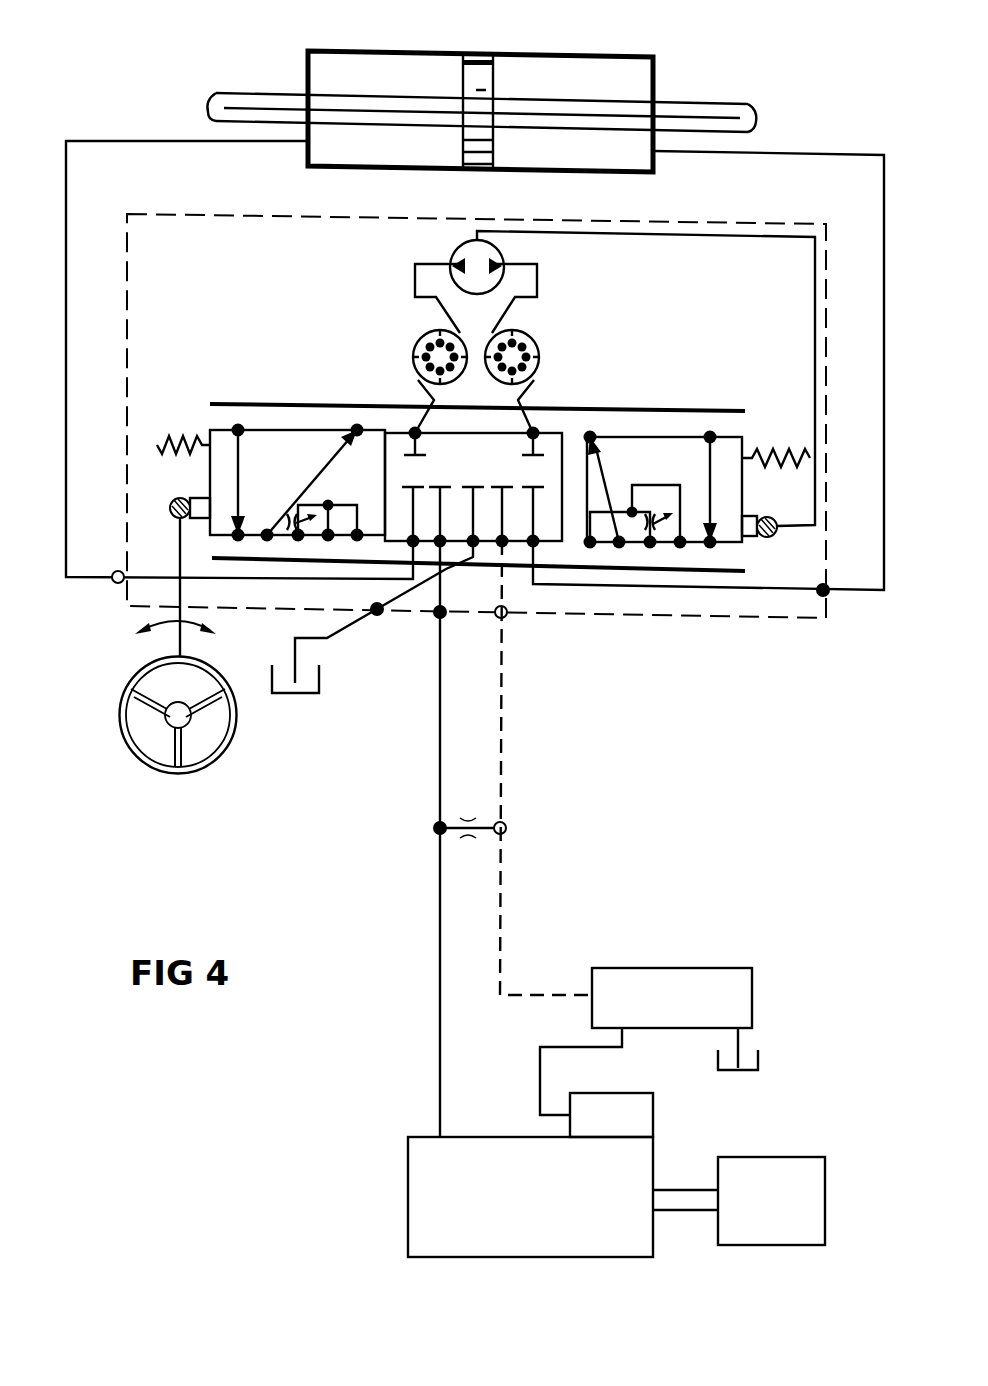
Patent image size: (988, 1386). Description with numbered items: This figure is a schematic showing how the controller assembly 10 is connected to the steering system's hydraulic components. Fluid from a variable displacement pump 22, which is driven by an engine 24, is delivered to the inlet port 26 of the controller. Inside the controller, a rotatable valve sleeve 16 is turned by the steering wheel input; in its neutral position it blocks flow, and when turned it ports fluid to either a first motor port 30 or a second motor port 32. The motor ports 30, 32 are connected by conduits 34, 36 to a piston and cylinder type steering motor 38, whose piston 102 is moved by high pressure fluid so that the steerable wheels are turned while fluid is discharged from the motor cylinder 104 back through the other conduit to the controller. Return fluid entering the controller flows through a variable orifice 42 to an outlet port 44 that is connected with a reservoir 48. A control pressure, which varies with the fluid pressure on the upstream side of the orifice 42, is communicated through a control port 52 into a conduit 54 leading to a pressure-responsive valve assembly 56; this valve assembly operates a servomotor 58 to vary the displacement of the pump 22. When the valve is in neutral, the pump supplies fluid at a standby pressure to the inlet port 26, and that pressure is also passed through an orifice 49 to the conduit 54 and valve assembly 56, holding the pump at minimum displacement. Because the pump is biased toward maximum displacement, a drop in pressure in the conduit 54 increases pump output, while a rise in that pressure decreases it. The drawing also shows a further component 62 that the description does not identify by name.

The controller assembly 10 is at (776, 222).
The valve sleeve 16 is at (738, 486).
The variable displacement pump 22 is at (406, 1170).
The engine 24 is at (768, 1246).
The inlet port 26 is at (446, 618).
The motor port 30 is at (116, 572).
The motor port 32 is at (826, 585).
The conduit 34 is at (62, 568).
The conduit 36 is at (888, 436).
The steering motor 38 is at (674, 80).
The variable orifice 42 is at (290, 530).
The outlet port 44 is at (375, 616).
The reservoir 48 is at (296, 700).
The orifice 49 is at (470, 822).
The control port 52 is at (508, 618).
The conduit 54 is at (512, 745).
The pressure-responsive valve assembly 56 is at (754, 996).
The servomotor 58 is at (624, 1108).
The motor and gear pump unit 62 is at (575, 318).
The piston 102 is at (490, 66).
The motor cylinder 104 is at (472, 58).